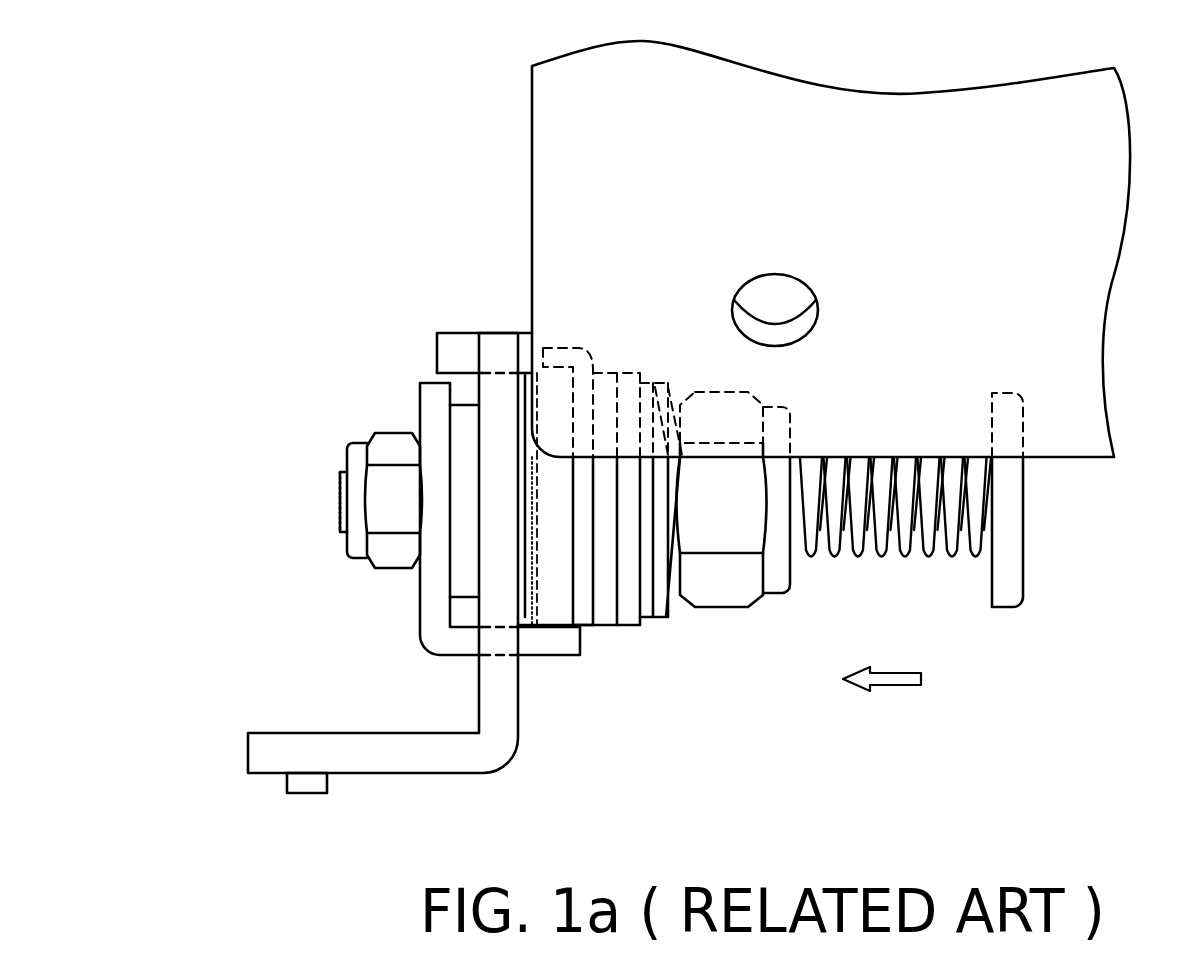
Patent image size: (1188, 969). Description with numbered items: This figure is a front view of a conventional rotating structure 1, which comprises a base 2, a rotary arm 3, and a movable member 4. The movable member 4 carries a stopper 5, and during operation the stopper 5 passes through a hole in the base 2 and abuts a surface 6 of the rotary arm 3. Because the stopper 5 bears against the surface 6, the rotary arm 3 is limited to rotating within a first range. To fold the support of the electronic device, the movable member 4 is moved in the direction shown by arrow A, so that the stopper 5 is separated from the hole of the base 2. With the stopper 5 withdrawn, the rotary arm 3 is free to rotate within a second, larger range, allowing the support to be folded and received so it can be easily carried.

The rotating structure 1 is at (162, 67).
The base 2 is at (473, 757).
The rotary arm 3 is at (557, 222).
The movable member 4 is at (355, 464).
The stopper 5 is at (450, 642).
The surface 6 is at (577, 628).